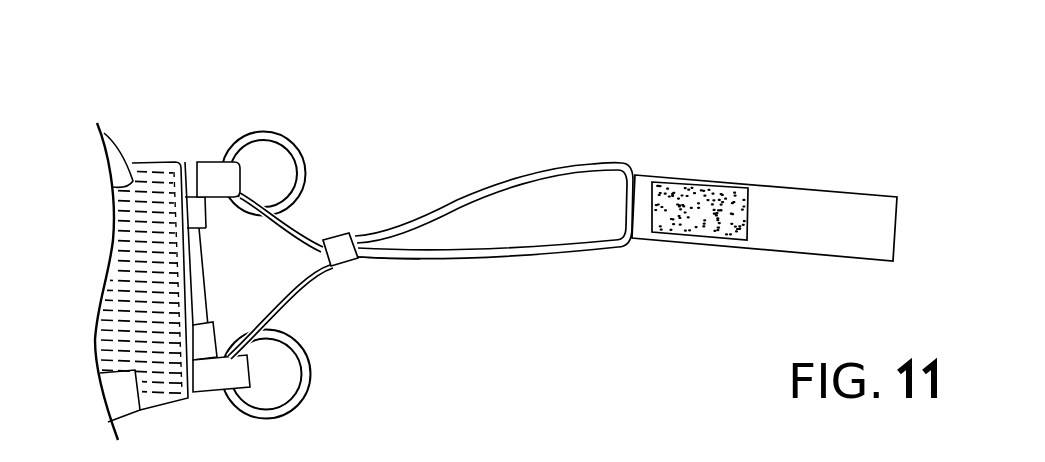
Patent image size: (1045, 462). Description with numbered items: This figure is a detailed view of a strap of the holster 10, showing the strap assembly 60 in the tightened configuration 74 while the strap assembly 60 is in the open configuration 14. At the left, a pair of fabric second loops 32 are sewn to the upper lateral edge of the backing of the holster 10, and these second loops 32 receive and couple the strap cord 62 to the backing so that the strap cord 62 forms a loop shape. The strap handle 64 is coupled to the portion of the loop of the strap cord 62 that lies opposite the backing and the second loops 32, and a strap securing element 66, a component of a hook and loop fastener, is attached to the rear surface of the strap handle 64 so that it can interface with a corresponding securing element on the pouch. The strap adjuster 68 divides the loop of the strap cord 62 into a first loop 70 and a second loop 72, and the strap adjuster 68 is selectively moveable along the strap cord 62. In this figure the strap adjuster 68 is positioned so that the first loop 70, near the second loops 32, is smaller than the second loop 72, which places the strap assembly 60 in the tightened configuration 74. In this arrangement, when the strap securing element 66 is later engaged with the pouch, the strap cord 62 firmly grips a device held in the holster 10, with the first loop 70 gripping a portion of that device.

The holster 10 is at (90, 84).
The open configuration 14 is at (494, 235).
The second loops 32 is at (200, 203).
The strap assembly 60 is at (533, 284).
The strap cord 62 is at (490, 187).
The strap handle 64 is at (877, 205).
The strap securing element 66 is at (698, 195).
The strap adjuster 68 is at (333, 238).
The first loop 70 is at (285, 274).
The second loop 72 is at (467, 233).
The tightened configuration 74 is at (384, 315).